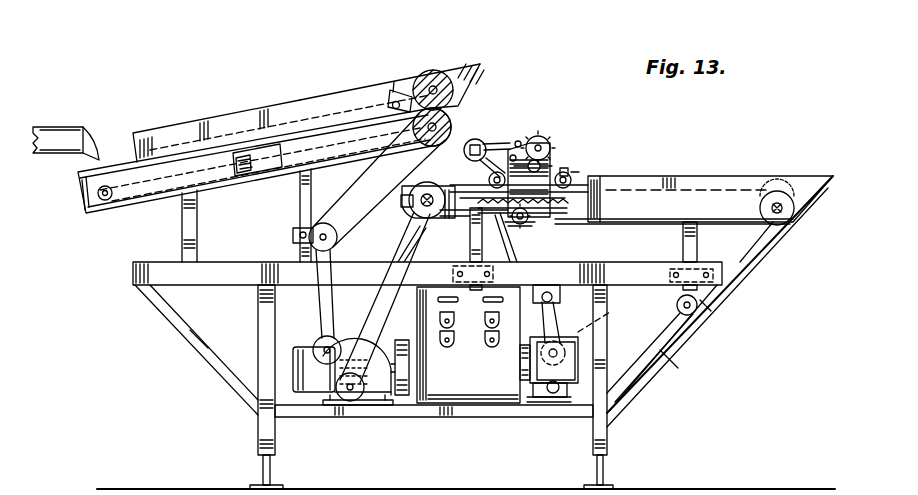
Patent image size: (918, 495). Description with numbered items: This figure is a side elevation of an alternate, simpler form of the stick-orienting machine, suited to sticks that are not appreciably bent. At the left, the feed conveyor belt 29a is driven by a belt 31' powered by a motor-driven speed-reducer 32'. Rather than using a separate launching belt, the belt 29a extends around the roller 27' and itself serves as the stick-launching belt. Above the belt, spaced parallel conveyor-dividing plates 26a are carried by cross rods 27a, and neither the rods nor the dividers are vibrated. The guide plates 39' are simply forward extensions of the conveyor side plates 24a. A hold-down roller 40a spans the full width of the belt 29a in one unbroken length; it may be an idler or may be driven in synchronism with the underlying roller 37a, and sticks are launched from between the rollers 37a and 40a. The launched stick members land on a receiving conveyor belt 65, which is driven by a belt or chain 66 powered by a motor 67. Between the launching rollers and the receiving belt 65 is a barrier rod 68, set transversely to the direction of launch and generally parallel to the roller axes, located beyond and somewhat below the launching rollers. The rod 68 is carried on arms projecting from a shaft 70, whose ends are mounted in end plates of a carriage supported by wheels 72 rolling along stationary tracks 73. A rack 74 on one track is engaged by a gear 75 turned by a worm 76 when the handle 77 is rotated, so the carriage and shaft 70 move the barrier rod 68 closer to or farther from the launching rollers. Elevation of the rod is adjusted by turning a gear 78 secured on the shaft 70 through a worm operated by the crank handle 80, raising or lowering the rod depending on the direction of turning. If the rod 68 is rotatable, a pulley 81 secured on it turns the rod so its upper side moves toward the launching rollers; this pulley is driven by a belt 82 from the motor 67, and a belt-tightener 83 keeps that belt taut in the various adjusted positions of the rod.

The conveyor side plates 24a is at (201, 120).
The conveyor-dividing plates 26a is at (307, 117).
The roller 27' is at (208, 129).
The cross rods 27a is at (380, 107).
The feed conveyor belt 29a is at (300, 178).
The belt 31' is at (355, 297).
The motor-driven speed-reducer 32' is at (350, 394).
The underlying roller 37a is at (345, 199).
The guide plates 39' is at (480, 69).
The hold-down roller 40a is at (437, 72).
The conveyor belt 65 is at (442, 190).
The belt or chain 66 is at (748, 262).
The motor 67 is at (568, 382).
The barrier rod 68 is at (512, 145).
The shaft 70 is at (557, 145).
The wheels 72 is at (598, 178).
The stationary tracks 73 is at (452, 224).
The rack 74 is at (475, 215).
The gear 75 is at (493, 216).
The worm 76 is at (520, 224).
The handle 77 is at (548, 232).
The gear 78 is at (552, 140).
The crank handle 80 is at (556, 168).
The pulley 81 is at (482, 138).
The belt 82 is at (563, 329).
The belt-tightener 83 is at (560, 304).